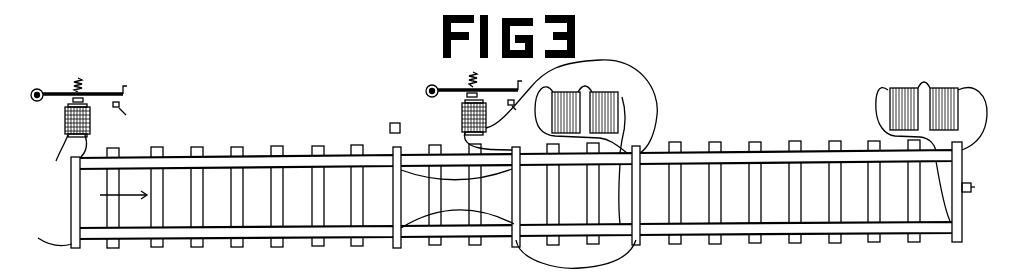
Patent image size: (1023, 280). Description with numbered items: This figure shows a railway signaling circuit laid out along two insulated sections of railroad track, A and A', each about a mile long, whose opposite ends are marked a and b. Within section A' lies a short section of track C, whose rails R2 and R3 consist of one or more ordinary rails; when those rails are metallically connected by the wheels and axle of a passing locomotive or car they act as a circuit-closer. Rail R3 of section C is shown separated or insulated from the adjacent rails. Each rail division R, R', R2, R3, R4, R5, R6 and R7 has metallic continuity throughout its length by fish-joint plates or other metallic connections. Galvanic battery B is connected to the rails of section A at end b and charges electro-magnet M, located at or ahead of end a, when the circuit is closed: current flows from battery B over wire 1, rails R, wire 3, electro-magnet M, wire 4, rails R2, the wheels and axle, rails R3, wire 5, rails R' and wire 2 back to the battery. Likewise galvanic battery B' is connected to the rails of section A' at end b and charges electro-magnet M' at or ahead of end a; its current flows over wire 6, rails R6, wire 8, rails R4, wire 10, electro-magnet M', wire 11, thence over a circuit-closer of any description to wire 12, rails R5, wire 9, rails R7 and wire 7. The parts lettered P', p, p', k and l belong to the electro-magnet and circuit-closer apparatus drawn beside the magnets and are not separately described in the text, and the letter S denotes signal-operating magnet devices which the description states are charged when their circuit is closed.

The wire 1 is at (972, 119).
The wire 2 is at (913, 154).
The wire 3 is at (571, 104).
The wire 4 is at (488, 141).
The wire 5 is at (576, 254).
The wire 6 is at (628, 160).
The wire 7 is at (577, 141).
The wire 8 is at (456, 177).
The wire 9 is at (457, 215).
The wire 10 is at (85, 146).
The wire 11 is at (67, 148).
The wire 12 is at (55, 236).
The insulated section of railroad-track A is at (774, 193).
The insulated section of railroad-track A' is at (256, 198).
The galvanic battery B is at (929, 90).
The galvanic battery B' is at (591, 97).
The short section of track C is at (452, 197).
The electro-magnet M is at (463, 117).
The electro-magnet M' is at (64, 120).
The rail R is at (795, 146).
The rail R' is at (795, 239).
The rail R2 is at (456, 163).
The rail R3 is at (456, 242).
The rail R4 is at (236, 150).
The rail R5 is at (236, 245).
The rail R6 is at (576, 170).
The rail R7 is at (576, 241).
The contact P' is at (395, 118).
The lever contact p is at (326, 83).
The contact p' is at (316, 112).
The spring k is at (283, 81).
The lever l is at (274, 87).
The end of track section a is at (368, 187).
The end of track section b is at (800, 183).
The signal-operating magnet S is at (516, 195).